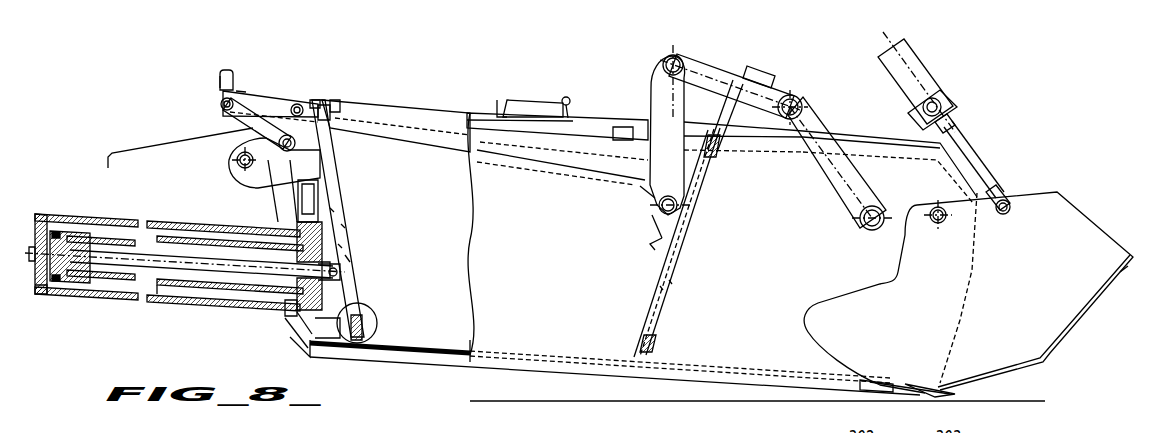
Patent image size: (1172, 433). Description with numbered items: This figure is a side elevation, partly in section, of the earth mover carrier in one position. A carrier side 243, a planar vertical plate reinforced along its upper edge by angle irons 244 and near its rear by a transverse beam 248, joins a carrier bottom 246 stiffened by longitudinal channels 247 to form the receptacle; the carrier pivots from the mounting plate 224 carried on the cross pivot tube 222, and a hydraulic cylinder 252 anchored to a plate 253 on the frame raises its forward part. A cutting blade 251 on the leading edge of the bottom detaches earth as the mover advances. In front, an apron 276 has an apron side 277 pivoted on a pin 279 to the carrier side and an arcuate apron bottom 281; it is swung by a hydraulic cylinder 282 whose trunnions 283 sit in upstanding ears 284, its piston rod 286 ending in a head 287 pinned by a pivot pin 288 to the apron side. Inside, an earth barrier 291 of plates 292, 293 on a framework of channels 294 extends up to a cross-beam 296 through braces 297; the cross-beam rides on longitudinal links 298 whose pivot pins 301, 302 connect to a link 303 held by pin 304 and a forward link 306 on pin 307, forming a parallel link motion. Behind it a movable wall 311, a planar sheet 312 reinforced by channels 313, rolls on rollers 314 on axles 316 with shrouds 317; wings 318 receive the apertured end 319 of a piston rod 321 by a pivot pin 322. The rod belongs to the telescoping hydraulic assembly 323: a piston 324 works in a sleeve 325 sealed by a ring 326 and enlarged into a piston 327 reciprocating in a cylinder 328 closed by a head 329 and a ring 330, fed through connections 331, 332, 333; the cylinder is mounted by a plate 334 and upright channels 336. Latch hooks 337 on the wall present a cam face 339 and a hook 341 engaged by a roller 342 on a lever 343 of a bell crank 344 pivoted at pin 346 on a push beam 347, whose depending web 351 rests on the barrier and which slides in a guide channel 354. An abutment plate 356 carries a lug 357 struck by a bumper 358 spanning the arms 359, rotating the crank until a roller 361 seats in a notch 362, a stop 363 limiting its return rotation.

The cross pivot tube 222 is at (236, 160).
The mounting plate 224 is at (179, 148).
The carrier side 243 is at (510, 362).
The angle irons 244 is at (623, 127).
The carrier bottom 246 is at (431, 355).
The channels 247 is at (389, 356).
The transverse beam 248 is at (300, 200).
The cutting blade 251 is at (925, 384).
The hydraulic cylinder 252 is at (652, 246).
The plate 253 is at (653, 226).
The front apron 276 is at (1120, 279).
The apron side 277 is at (1097, 231).
The pivot pin 279 is at (941, 224).
The apron bottom 281 is at (1090, 312).
The hydraulic cylinder 282 is at (924, 63).
The trunnions 283 is at (941, 102).
The upstanding ears 284 is at (900, 138).
The piston rod 286 is at (971, 154).
The head 287 is at (1006, 190).
The pivot pin 288 is at (1012, 210).
The earth barrier 291 is at (685, 248).
The metal plate 292 is at (660, 288).
The metal plate 293 is at (670, 282).
The channels 294 is at (716, 148).
The cross-beam 296 is at (755, 68).
The braces 297 is at (738, 108).
The longitudinal links 298 is at (713, 70).
The pivot pin 301 is at (668, 58).
The pivot pin 302 is at (796, 98).
The link 303 is at (652, 95).
The pivot pin 304 is at (678, 205).
The forward link 306 is at (836, 126).
The pivot pin 307 is at (872, 232).
The movable wall 311 is at (345, 226).
The planar sheet 312 is at (336, 192).
The channels 313 is at (340, 106).
The rollers 314 is at (345, 358).
The mounting axles 316 is at (342, 322).
The shrouds 317 is at (370, 305).
The wings 318 is at (352, 275).
The apertured end 319 is at (342, 246).
The piston rod 321 is at (168, 282).
The pivot pin 322 is at (348, 258).
The hydraulic expansible chamber assembly 323 is at (194, 222).
The piston 324 is at (70, 232).
The sleeve 325 is at (118, 236).
The ring 326 is at (295, 307).
The piston 327 is at (68, 283).
The cylinder 328 is at (104, 298).
The head 329 is at (40, 216).
The ring 330 is at (338, 210).
The connection 331 is at (37, 296).
The connection 332 is at (228, 302).
The connection 333 is at (323, 290).
The plate 334 is at (293, 334).
The upright channels 336 is at (300, 352).
The latch hooks 337 is at (275, 184).
The cam face 339 is at (321, 106).
The hook 341 is at (296, 104).
The roller 342 is at (240, 176).
The lever 343 is at (247, 126).
The bell crank 344 is at (258, 100).
The pivot pin 346 is at (221, 104).
The push beams 347 is at (418, 104).
The depending web 351 is at (650, 200).
The guide channel 354 is at (378, 108).
The abutment plate 356 is at (528, 104).
The outturned lug 357 is at (500, 108).
The bumper 358 is at (230, 70).
The arms 359 is at (220, 78).
The roller 361 is at (316, 100).
The notch 362 is at (566, 98).
The stop 363 is at (241, 91).